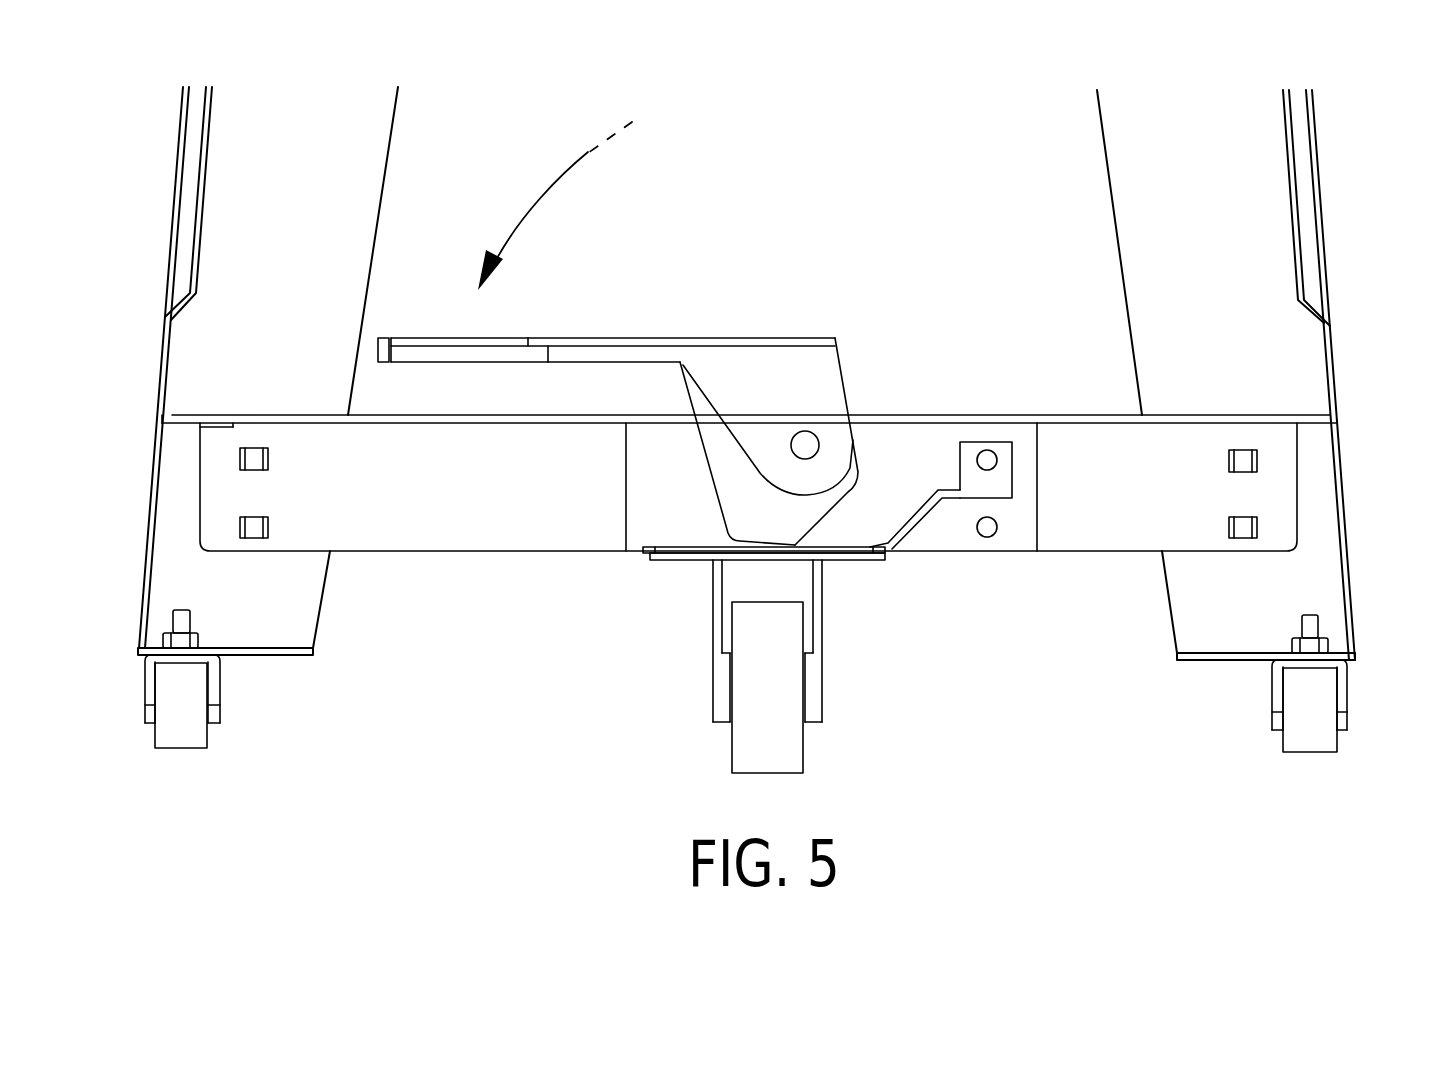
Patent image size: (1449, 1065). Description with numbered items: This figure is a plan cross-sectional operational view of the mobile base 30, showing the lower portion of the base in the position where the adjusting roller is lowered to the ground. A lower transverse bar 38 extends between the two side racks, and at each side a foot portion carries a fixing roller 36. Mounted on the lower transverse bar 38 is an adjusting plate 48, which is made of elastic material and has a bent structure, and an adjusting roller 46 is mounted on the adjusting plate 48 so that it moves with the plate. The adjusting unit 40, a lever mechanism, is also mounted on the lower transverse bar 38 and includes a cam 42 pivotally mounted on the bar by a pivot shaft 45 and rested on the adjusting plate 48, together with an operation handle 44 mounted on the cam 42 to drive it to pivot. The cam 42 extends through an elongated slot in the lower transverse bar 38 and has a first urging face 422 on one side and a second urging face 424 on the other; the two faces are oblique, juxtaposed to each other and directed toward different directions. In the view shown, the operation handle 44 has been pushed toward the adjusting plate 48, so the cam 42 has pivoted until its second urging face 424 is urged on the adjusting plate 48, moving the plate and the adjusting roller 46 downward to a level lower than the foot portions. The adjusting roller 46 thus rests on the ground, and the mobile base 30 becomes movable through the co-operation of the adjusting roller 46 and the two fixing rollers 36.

The mobile base 30 is at (1382, 212).
The fixing roller 36 is at (185, 733).
The lower transverse bar 38 is at (975, 415).
The adjusting unit 40 is at (676, 408).
The cam 42 is at (838, 500).
The operation handle 44 is at (657, 340).
The pivot shaft 45 is at (810, 440).
The adjusting roller 46 is at (787, 735).
The adjusting plate 48 is at (920, 520).
The first urging face 422 is at (803, 510).
The second urging face 424 is at (753, 547).